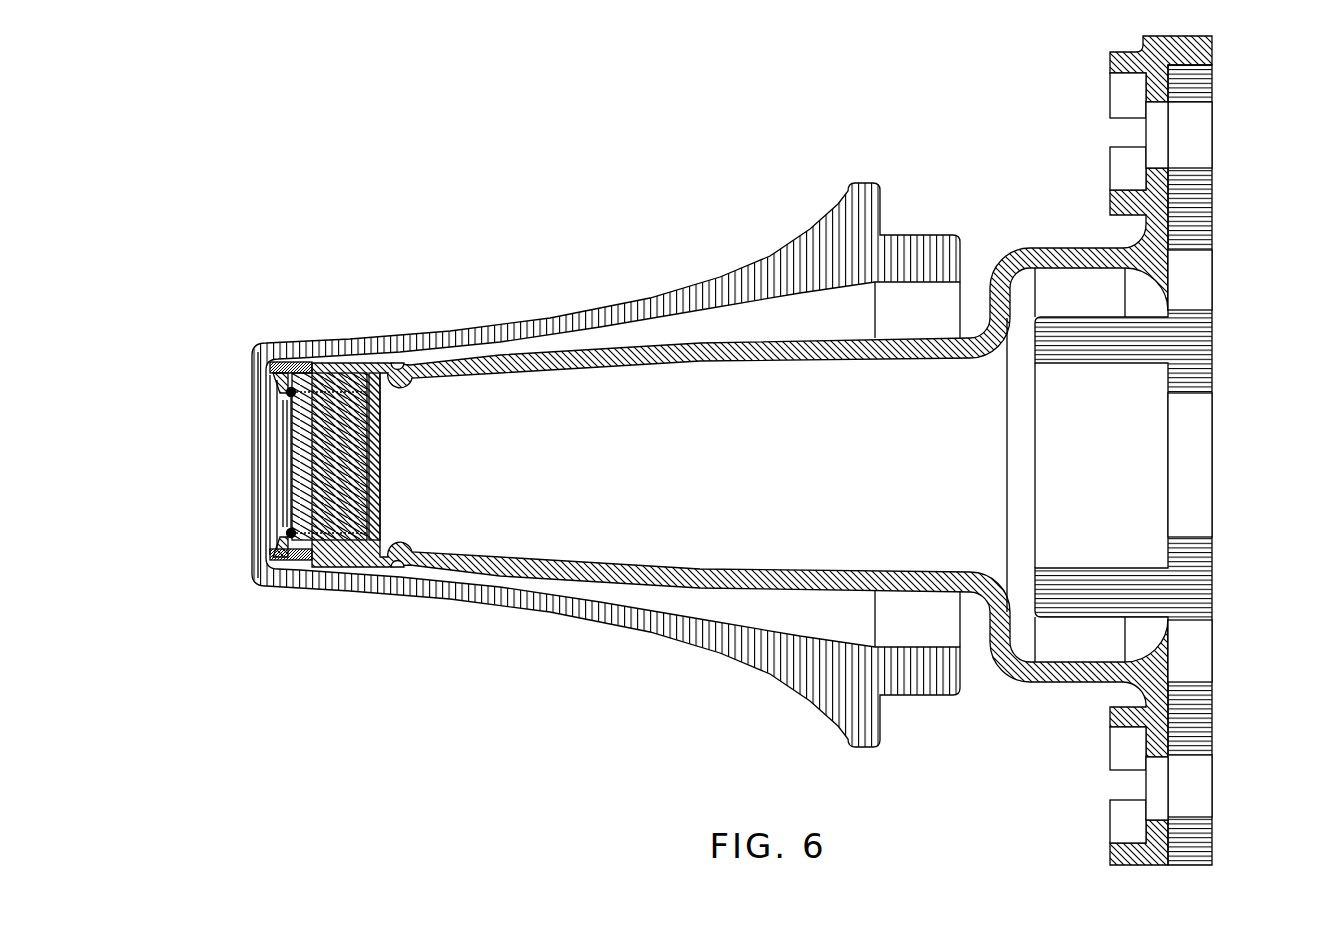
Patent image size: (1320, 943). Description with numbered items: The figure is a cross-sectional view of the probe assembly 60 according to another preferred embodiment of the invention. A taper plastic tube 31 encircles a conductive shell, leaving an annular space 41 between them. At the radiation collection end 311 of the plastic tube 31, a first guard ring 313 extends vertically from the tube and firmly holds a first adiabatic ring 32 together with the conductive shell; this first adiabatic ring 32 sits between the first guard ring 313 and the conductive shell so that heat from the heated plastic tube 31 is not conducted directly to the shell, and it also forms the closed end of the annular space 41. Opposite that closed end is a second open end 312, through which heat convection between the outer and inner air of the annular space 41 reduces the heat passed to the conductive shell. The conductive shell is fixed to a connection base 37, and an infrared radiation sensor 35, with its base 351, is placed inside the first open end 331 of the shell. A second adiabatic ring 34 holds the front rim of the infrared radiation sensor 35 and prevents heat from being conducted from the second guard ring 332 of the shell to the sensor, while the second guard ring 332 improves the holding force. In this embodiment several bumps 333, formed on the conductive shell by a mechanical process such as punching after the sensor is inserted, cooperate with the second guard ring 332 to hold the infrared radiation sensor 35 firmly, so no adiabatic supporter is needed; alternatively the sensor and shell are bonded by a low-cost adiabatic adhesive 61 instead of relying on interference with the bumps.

The probe assembly 60 is at (606, 406).
The taper plastic tube 31 is at (523, 330).
The radiation collection end 311 is at (243, 390).
The second open end 312 is at (966, 258).
The first guard ring 313 is at (262, 378).
The first adiabatic ring 32 is at (310, 366).
The first open end 331 is at (282, 517).
The second guard ring 332 is at (283, 402).
The bumps 333 is at (432, 383).
The second adiabatic ring 34 is at (282, 363).
The infrared radiation sensor 35 is at (340, 427).
The base 351 is at (373, 422).
The connection base 37 is at (1214, 345).
The annular space 41 is at (641, 337).
The adiabatic adhesive 61 is at (337, 548).